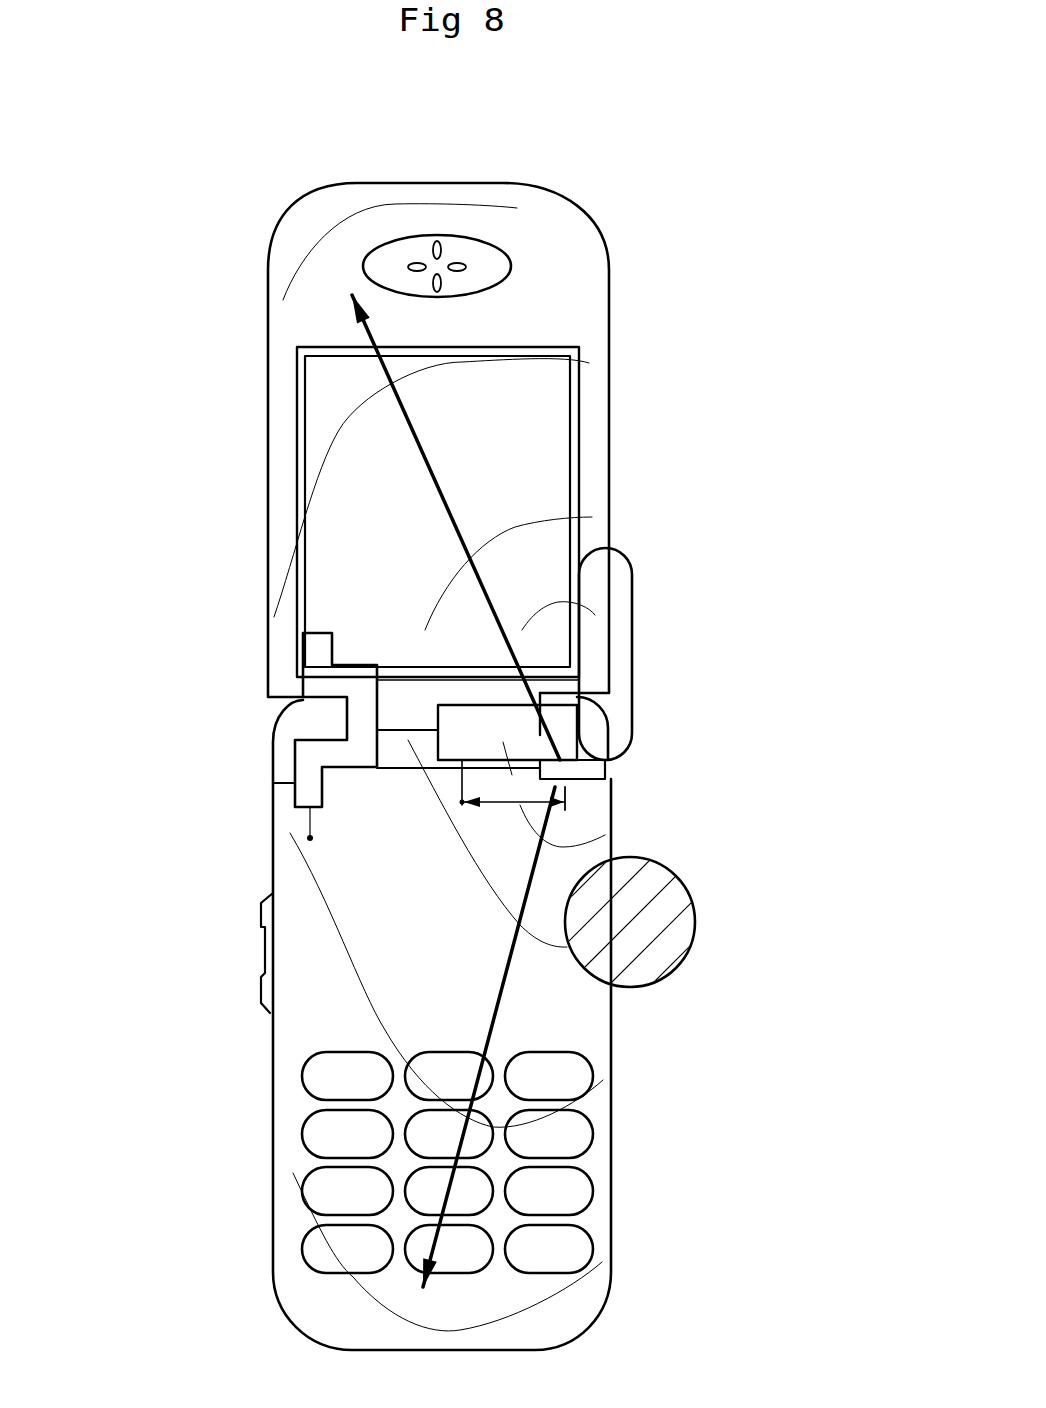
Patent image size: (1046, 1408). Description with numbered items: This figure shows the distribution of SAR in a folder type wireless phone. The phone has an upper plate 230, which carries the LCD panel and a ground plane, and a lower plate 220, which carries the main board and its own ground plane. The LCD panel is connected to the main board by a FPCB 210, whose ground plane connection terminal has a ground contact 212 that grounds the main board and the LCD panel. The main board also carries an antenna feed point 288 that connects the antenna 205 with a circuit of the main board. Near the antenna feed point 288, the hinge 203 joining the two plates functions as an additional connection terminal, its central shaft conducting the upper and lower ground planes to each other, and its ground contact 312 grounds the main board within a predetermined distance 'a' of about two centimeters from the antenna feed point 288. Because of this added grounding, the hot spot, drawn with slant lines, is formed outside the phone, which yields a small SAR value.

The upper plate 230 is at (595, 333).
The lower plate 220 is at (603, 1127).
The antenna 205 is at (620, 583).
The hinge 203 is at (560, 733).
The FPCB 210 is at (313, 662).
The ground contact 212 is at (310, 838).
The antenna feed point 288 is at (565, 802).
The ground contact 312 is at (462, 803).